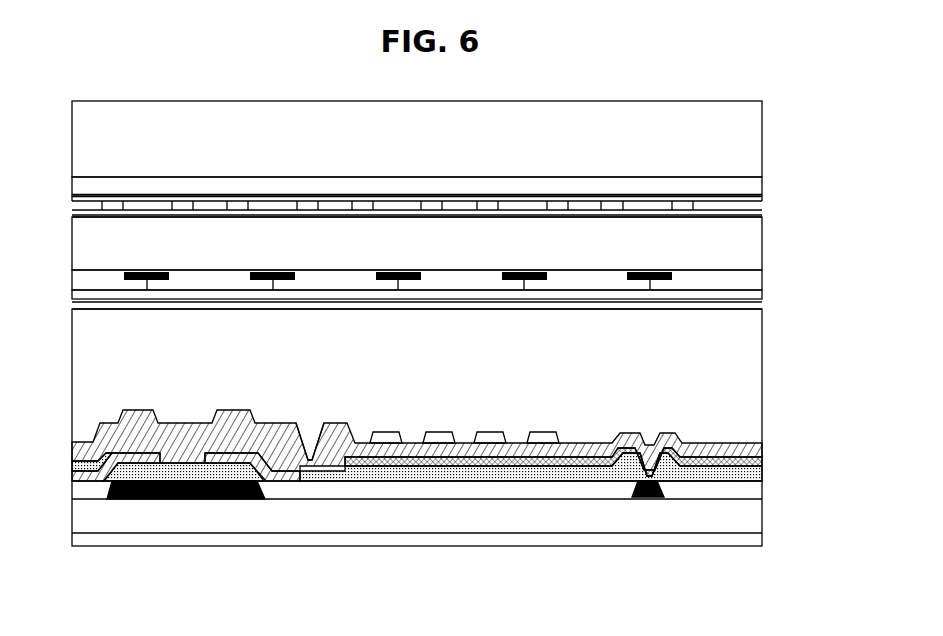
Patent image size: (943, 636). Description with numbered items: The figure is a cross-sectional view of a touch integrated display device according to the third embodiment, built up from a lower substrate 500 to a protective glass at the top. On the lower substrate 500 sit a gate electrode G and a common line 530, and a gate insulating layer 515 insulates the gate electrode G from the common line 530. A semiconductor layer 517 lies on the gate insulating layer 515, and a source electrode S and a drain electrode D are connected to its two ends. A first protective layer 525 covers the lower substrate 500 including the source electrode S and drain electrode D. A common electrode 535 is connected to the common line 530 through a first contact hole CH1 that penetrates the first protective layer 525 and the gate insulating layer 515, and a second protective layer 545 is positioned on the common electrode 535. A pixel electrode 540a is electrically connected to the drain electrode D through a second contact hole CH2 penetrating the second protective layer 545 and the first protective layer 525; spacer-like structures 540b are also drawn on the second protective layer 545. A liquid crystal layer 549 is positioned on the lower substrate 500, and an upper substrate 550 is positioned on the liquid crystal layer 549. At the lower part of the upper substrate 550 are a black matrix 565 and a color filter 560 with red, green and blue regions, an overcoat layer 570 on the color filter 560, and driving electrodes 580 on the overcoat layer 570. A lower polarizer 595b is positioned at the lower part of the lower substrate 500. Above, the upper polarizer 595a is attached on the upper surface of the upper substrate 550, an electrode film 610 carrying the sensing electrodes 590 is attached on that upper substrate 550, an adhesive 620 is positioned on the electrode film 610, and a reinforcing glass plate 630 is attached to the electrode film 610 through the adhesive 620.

The reinforcing glass plate 630 is at (762, 133).
The sensing electrodes 590 is at (683, 210).
The adhesive 620 is at (762, 184).
The electrode film 610 is at (762, 202).
The upper polarizer 595a is at (762, 213).
The upper substrate 550 is at (762, 240).
The black matrix 565 is at (665, 272).
The color filter 560 is at (762, 278).
The overcoat layer 570 is at (762, 295).
The driving electrodes 580 is at (762, 307).
The liquid crystal layer 549 is at (762, 384).
The second protective layer 545 is at (762, 450).
The first protective layer 525 is at (762, 476).
The lower polarizer 595b is at (762, 540).
The semiconductor layer 517 is at (167, 463).
The gate electrode G is at (215, 499).
The lower substrate 500 is at (252, 527).
The drain electrode D is at (287, 481).
The source electrode S is at (72, 476).
The second contact hole CH2 is at (328, 482).
The pixel electrode 540a is at (388, 437).
The common electrode 535 is at (440, 466).
The second spacer 540b is at (465, 438).
The gate insulating layer 515 is at (538, 493).
The common line 530 is at (652, 497).
The first contact hole CH1 is at (668, 482).